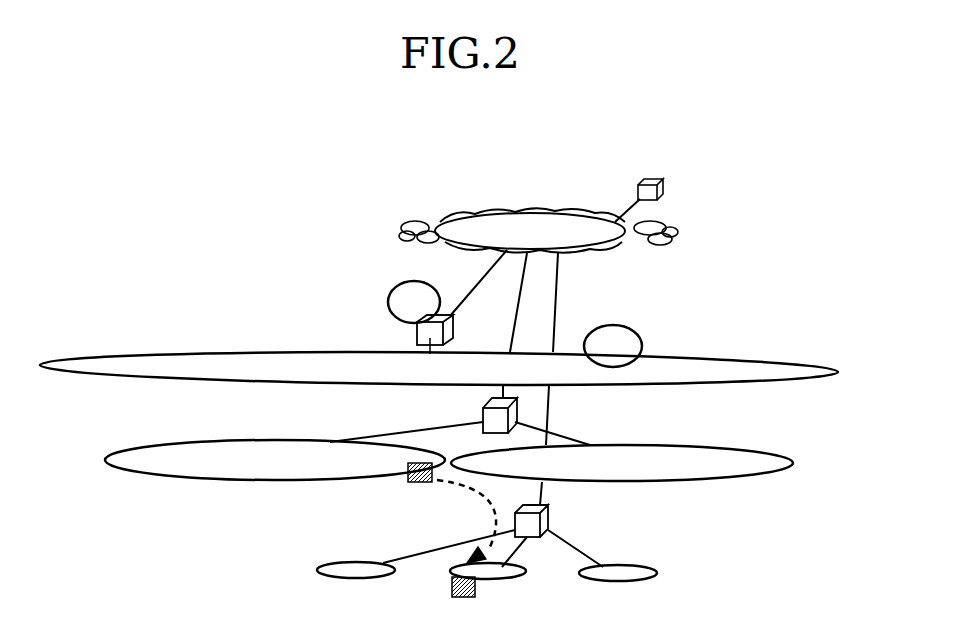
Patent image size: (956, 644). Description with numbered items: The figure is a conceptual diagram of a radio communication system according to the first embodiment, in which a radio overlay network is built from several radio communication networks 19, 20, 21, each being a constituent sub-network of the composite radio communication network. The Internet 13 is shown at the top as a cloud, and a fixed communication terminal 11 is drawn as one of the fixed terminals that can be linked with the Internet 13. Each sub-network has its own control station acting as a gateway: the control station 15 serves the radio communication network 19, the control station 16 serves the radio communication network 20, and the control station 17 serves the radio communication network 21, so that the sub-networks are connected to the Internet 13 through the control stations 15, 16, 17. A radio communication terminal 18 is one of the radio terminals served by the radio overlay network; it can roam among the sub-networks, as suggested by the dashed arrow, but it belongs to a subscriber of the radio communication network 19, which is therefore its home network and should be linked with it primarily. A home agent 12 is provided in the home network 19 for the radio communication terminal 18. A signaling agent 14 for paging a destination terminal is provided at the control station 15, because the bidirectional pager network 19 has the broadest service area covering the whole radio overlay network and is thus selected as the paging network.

The fixed communication terminal 11 is at (652, 181).
The home agent 12 is at (612, 324).
The Internet 13 is at (515, 227).
The signaling agent 14 is at (400, 286).
The control station 15 is at (415, 335).
The control station 16 is at (470, 412).
The control station 17 is at (549, 518).
The radio communication terminal 18 is at (475, 596).
The radio communication network 19 is at (670, 354).
The radio communication network 20 is at (729, 446).
The radio communication network 21 is at (658, 570).